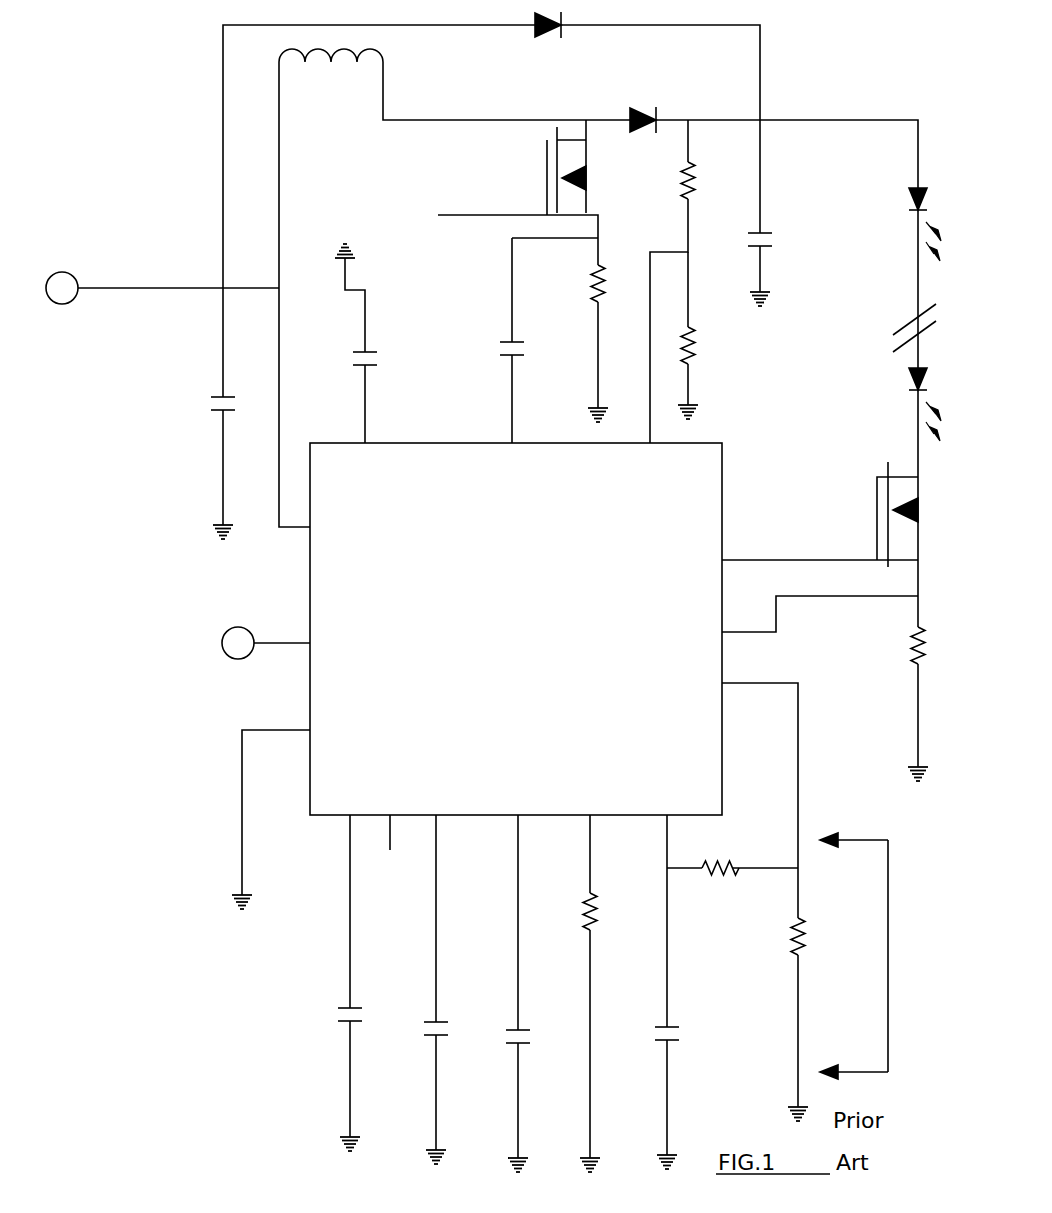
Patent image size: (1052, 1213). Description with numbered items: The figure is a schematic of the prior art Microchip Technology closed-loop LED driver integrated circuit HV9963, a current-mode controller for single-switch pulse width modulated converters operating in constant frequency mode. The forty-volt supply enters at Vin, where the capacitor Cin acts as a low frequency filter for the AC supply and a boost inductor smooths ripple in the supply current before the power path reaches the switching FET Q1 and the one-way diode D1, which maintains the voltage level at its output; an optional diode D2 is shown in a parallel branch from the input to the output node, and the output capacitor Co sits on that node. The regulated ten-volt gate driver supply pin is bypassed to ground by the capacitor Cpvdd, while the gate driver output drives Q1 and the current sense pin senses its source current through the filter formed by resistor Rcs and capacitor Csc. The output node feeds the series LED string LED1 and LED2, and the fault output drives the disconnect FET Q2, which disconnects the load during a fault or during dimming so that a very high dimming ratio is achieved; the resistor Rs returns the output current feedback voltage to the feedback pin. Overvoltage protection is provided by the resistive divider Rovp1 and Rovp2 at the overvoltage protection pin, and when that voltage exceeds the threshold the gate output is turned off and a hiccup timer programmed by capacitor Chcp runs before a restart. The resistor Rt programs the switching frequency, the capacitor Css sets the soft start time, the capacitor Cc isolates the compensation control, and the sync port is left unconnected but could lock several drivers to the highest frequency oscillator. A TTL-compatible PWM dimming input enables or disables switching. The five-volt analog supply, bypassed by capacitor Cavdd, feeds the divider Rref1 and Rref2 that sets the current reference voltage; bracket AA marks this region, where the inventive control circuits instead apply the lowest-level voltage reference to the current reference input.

The LED IC driver HV9963 is at (516, 629).
The input of the high-voltage regulator Vin is at (75, 261).
The input capacitor Cin is at (205, 465).
The PVDD bypass capacitor Cpvdd is at (344, 343).
The optional diode D2 is at (528, 40).
The diode D1 is at (636, 136).
The switching FET Q1 is at (547, 178).
The current sense resistor Rcs is at (583, 330).
The current sense filter capacitor Csc is at (495, 340).
The overvoltage protection divider resistor Rovp1 is at (691, 281).
The overvoltage protection divider resistor Rovp2 is at (705, 335).
The output capacitor Co is at (774, 269).
The first LED LED1 is at (915, 208).
The second LED LED2 is at (915, 390).
The disconnect FET Q2 is at (877, 512).
The current sense resistor Rs is at (825, 670).
The reference divider resistor Rref1 is at (732, 881).
The reference divider resistor Rref2 is at (765, 902).
The AVDD bypass capacitor Cavdd is at (692, 992).
The timing resistor Rt is at (602, 993).
The compensation capacitor Cc is at (500, 993).
The soft start capacitor Css is at (417, 989).
The hiccup timer capacitor Chcp is at (331, 983).
The SYNC input/output port sync is at (390, 845).
The PWM dimming input PWM is at (223, 635).
The bracket indicating inventive control features AA is at (872, 956).